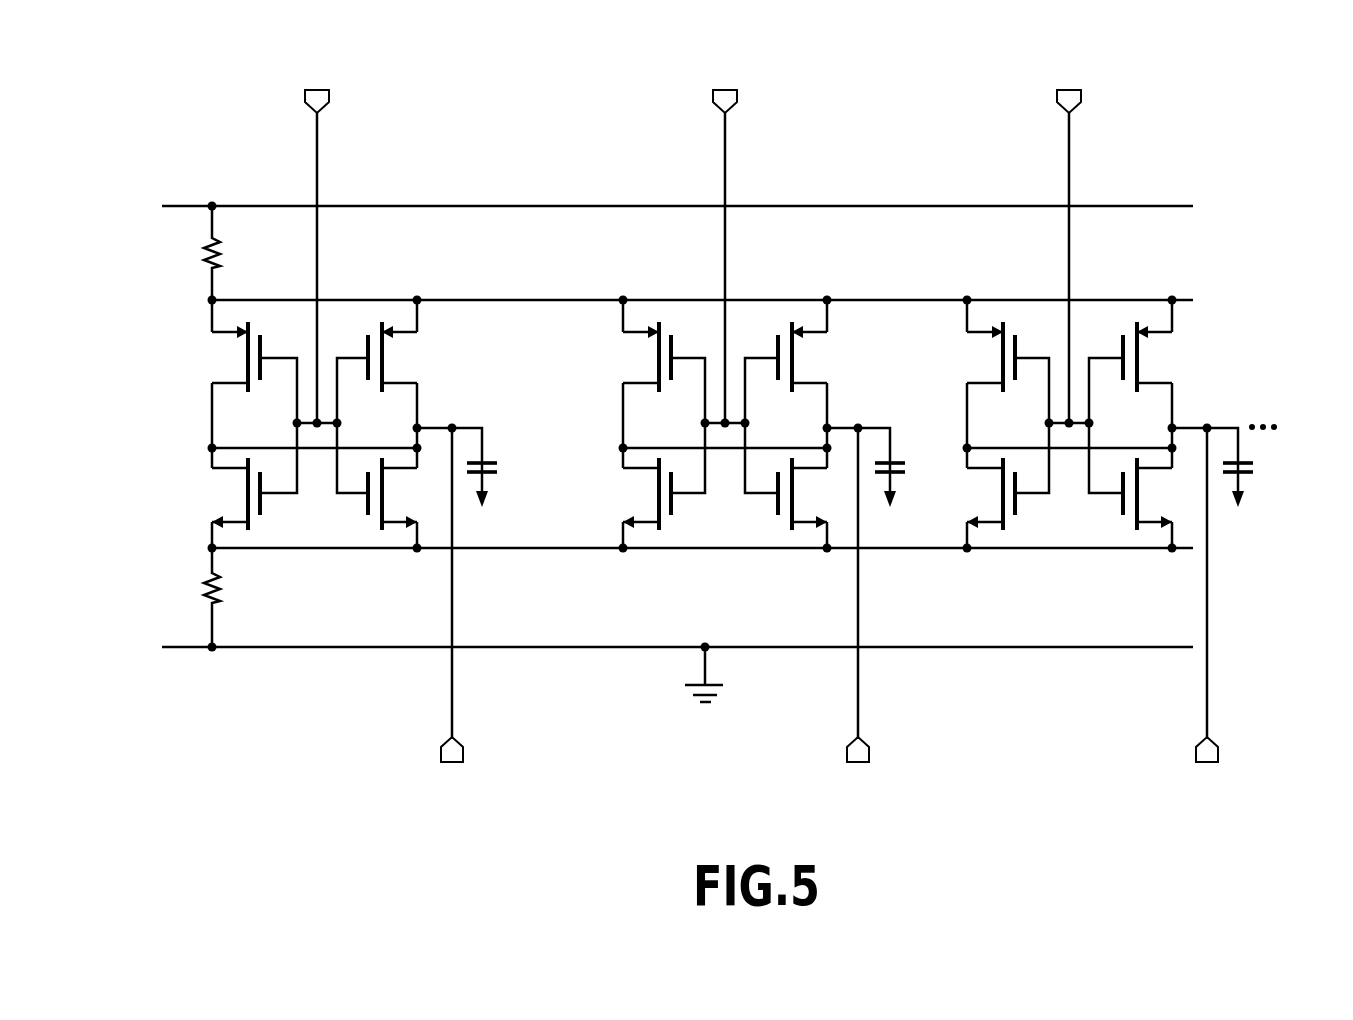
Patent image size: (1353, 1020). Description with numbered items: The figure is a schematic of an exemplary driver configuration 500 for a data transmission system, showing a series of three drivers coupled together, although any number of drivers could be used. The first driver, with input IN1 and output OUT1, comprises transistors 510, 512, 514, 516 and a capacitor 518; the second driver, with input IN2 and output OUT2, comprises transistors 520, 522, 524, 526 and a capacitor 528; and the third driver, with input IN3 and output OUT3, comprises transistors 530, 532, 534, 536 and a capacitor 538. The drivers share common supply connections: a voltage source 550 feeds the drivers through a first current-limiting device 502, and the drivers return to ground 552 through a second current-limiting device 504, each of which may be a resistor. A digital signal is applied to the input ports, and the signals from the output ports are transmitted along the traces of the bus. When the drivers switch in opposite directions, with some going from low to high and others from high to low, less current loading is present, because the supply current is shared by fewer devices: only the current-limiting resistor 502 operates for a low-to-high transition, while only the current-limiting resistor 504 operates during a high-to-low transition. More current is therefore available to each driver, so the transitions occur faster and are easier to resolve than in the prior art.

The analog memory / sample-and-hold circuit 500 is at (452, 158).
The first current-limiting device 502 is at (195, 252).
The second current-limiting device 504 is at (198, 592).
The transistor 510 is at (208, 360).
The transistor 512 is at (215, 498).
The transistor 514 is at (408, 348).
The transistor 516 is at (413, 493).
The capacitor 518 is at (507, 462).
The transistor 520 is at (637, 358).
The transistor 522 is at (638, 498).
The transistor 524 is at (810, 352).
The transistor 526 is at (828, 487).
The capacitor 528 is at (913, 470).
The transistor 530 is at (977, 357).
The transistor 532 is at (983, 494).
The transistor 534 is at (1163, 343).
The transistor 536 is at (1167, 500).
The capacitor 538 is at (1262, 464).
The voltage source 550 is at (187, 205).
The ground 552 is at (250, 648).